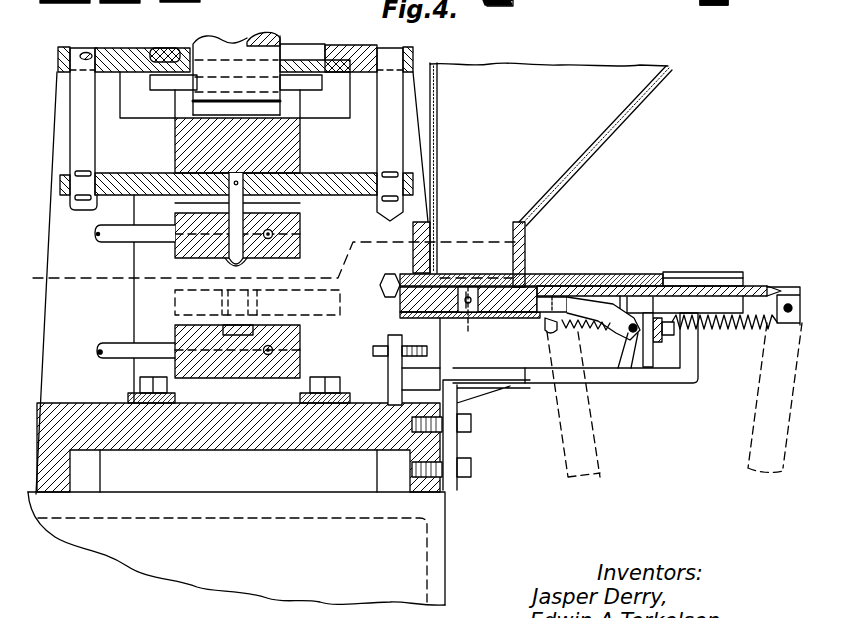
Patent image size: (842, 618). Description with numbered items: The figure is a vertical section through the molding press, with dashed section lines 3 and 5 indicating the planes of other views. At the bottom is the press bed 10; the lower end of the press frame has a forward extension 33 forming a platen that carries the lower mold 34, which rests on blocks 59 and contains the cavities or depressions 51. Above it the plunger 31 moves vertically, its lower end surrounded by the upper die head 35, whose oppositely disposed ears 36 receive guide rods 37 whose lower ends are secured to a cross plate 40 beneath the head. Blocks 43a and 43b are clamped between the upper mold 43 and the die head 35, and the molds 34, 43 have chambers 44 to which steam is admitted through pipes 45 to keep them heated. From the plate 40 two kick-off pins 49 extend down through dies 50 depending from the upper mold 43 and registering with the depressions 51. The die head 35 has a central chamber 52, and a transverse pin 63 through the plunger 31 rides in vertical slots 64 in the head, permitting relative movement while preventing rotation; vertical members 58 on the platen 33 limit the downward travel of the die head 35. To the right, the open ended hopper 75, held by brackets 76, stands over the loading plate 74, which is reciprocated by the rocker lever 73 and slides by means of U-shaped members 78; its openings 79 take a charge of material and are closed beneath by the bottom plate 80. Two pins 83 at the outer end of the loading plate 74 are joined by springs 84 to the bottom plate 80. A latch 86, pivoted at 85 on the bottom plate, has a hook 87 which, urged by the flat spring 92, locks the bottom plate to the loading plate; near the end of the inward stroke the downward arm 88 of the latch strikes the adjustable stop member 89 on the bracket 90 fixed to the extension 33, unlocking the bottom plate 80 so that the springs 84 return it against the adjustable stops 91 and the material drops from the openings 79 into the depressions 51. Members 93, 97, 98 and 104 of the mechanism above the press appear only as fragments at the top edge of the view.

The section line 3 is at (528, 241).
The valve rod 5 is at (468, 297).
The press bed 10 is at (448, 513).
The plunger 31 is at (262, 32).
The forward extension 33 is at (254, 434).
The lower mold 34 is at (300, 371).
The upper die head 35 is at (334, 47).
The ears 36 is at (58, 56).
The guide rods 37 is at (74, 126).
The cross plate 40 is at (316, 194).
The upper mold 43 is at (300, 247).
The clamped block 43a is at (300, 155).
The clamped block 43b is at (182, 202).
The chambers 44 is at (273, 234).
The pipes 45 is at (108, 242).
The kick-off pins 49 is at (250, 264).
The dies 50 is at (228, 262).
The cavities or depressions 51 is at (226, 326).
The central chamber 52 is at (303, 46).
The vertical members 58 is at (134, 297).
The blocks 59 is at (221, 398).
The transverse pin 63 is at (304, 88).
The vertical slots 64 is at (140, 112).
The rocker lever 73 is at (757, 408).
The loading plate 74 is at (543, 0).
The hopper 75 is at (594, 152).
The brackets 76 is at (413, 253).
The U-shaped members 78 is at (685, 272).
The openings 79 is at (466, 290).
The bottom plate 80 is at (491, 318).
The pins 83 is at (800, 331).
The springs 84 is at (737, 328).
The pivot 85 is at (648, 344).
The latch 86 is at (618, 314).
The hook 87 is at (602, 284).
The downward arm 88 is at (630, 358).
The adjustable stop member 89 is at (410, 349).
The bracket 90 is at (538, 376).
The adjustable stops 91 is at (665, 334).
The flat spring 92 is at (493, 287).
The upper member 93 is at (512, 0).
The upper link 97 is at (62, 3).
The upper link 98 is at (133, 3).
The upper lever 104 is at (187, 1).